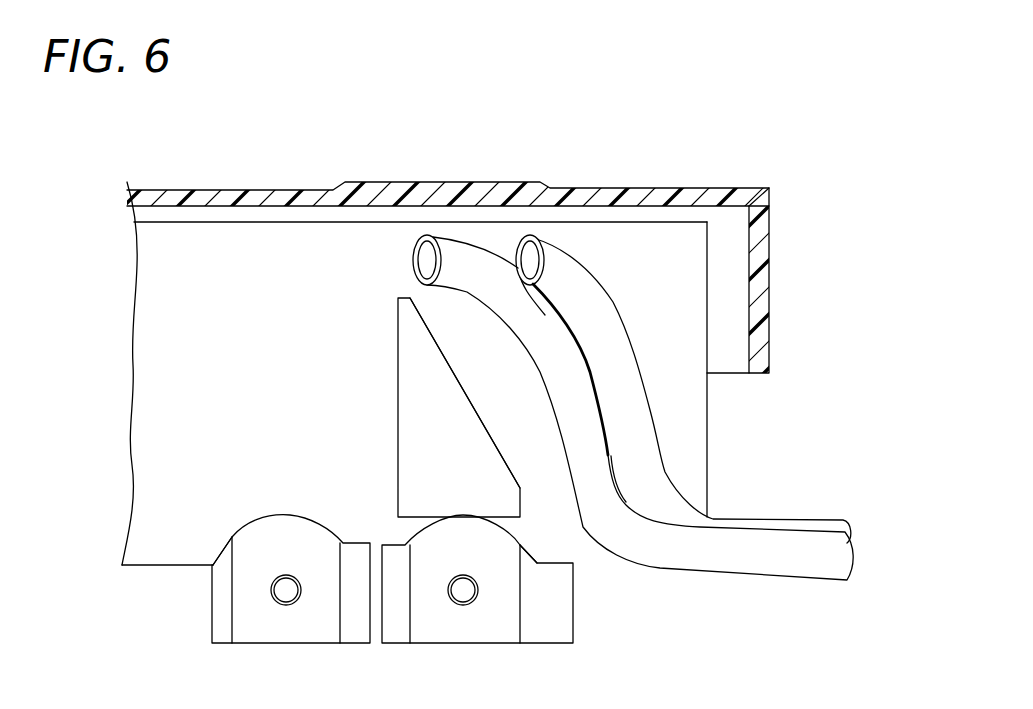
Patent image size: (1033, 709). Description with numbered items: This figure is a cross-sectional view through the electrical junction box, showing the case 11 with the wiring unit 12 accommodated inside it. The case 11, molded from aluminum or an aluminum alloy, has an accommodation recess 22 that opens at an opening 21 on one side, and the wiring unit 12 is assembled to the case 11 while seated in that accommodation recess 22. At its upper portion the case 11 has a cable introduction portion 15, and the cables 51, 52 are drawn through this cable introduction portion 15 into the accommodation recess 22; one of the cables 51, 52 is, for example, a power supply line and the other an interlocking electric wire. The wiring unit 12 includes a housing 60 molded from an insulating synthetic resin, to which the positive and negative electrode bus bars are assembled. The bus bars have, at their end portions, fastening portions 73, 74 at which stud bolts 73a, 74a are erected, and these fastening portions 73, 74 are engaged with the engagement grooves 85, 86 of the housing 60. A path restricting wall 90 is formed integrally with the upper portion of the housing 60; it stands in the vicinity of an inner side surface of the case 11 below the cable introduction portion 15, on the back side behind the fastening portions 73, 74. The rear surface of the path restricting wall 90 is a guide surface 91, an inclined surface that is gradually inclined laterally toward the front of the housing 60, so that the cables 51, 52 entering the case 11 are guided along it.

The case 11 is at (760, 179).
The wiring unit 12 is at (145, 569).
The cable introduction portion 15 is at (455, 232).
The opening 21 is at (728, 364).
The accommodation recess 22 is at (727, 258).
The cable 51 is at (630, 412).
The cable 52 is at (585, 466).
The housing 60 is at (168, 282).
The fastening portion 73 is at (253, 627).
The stud bolt 73a is at (287, 597).
The fastening portion 74 is at (497, 627).
The stud bolt 74a is at (466, 597).
The engagement groove 85 is at (240, 532).
The engagement groove 86 is at (510, 532).
The path restricting wall 90 is at (425, 411).
The guide surface 91 is at (486, 425).